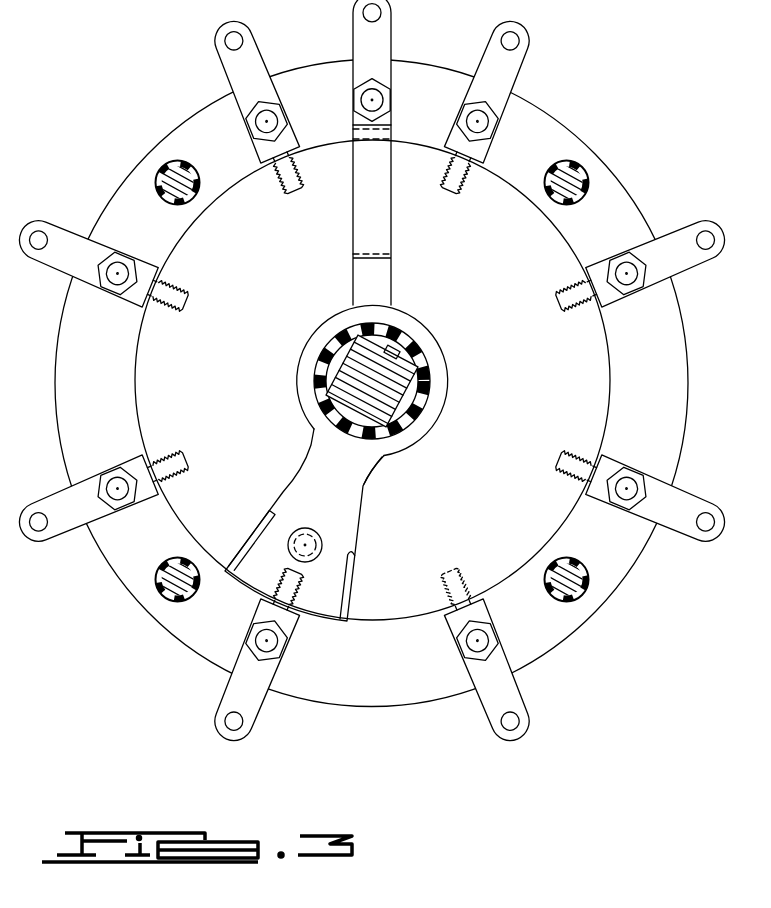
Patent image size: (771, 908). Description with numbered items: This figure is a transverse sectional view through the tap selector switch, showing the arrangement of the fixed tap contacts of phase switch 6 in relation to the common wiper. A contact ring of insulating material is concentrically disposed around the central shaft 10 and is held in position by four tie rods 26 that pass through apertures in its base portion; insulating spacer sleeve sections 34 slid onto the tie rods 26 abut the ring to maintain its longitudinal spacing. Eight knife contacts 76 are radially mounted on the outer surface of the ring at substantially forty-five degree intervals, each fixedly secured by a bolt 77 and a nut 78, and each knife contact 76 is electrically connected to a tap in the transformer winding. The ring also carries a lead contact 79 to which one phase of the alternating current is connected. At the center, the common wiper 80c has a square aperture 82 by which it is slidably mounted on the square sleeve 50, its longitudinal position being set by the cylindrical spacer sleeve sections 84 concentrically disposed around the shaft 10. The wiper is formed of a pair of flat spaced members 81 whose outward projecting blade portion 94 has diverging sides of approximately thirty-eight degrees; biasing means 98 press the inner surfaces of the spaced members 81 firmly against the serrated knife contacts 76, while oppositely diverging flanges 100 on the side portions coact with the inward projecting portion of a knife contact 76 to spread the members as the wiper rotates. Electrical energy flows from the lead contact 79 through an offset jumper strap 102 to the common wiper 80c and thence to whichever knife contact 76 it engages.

The phase switch 6 is at (572, 121).
The central shaft 10 is at (406, 389).
The tie rod 26 is at (190, 165).
The spacer sleeve section 34 is at (198, 196).
The square sleeve 50 is at (420, 368).
The knife contact 76 is at (232, 54).
The bolt 77 is at (116, 293).
The nut 78 is at (128, 262).
The lead contact 79 is at (384, 41).
The common wiper 80c is at (370, 508).
The spaced member 81 is at (392, 485).
The square aperture 82 is at (400, 346).
The cylindrical spacer sleeve section 84 is at (420, 429).
The blade portion 94 is at (362, 539).
The biasing means 98 is at (312, 531).
The diverging flange 100 is at (252, 530).
The jumper strap 102 is at (392, 239).